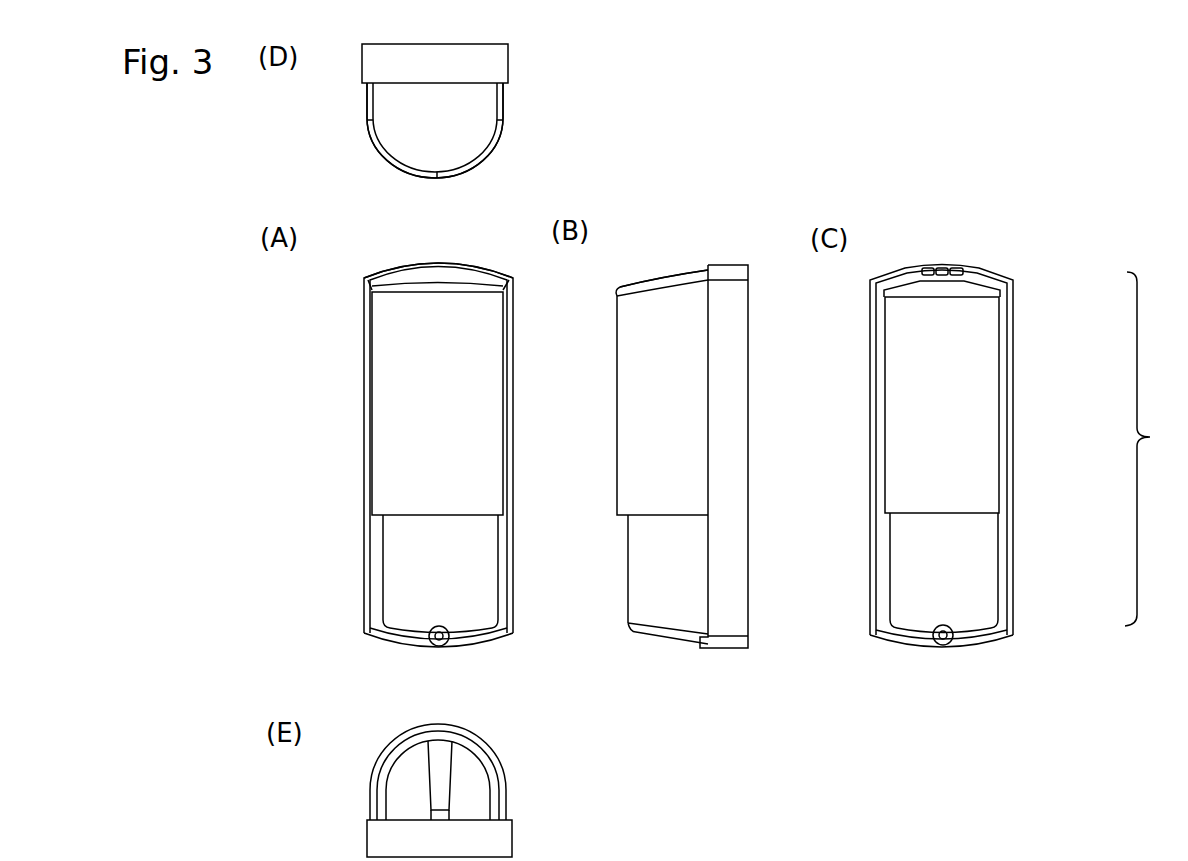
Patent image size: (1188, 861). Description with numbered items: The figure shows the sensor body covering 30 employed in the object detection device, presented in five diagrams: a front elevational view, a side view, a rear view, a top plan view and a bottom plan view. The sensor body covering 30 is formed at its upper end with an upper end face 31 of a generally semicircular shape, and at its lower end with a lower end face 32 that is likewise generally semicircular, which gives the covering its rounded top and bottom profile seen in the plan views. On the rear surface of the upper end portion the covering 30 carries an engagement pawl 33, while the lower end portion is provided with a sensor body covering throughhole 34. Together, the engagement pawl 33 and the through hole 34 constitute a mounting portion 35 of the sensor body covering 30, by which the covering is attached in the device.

The sensor body covering 30 is at (513, 120).
The upper end face 31 is at (455, 143).
The lower end face 32 is at (473, 637).
The engagement pawl 33 is at (948, 266).
The sensor body covering throughhole 34 is at (446, 641).
The mounting portion 35 is at (1156, 449).